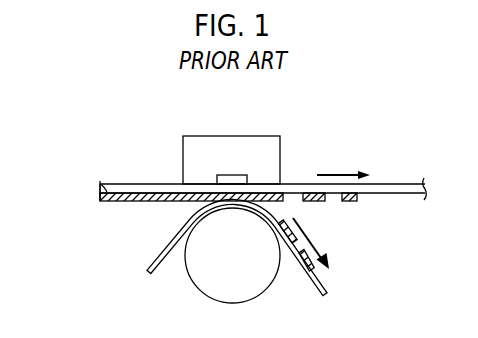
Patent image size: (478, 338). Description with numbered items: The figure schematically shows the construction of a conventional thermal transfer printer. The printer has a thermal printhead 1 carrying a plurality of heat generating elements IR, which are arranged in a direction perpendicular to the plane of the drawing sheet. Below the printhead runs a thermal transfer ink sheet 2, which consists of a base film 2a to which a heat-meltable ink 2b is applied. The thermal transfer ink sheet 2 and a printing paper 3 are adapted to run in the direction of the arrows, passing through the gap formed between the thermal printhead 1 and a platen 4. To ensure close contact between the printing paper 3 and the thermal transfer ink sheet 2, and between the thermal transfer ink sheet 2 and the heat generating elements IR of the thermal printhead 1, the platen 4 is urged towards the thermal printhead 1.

The thermal printhead 1 is at (235, 150).
The heat generating elements IR is at (247, 176).
The thermal transfer ink sheet 2 is at (157, 192).
The base film 2a is at (114, 183).
The heat-meltable ink 2b is at (100, 192).
The printing paper 3 is at (153, 253).
The platen 4 is at (208, 275).